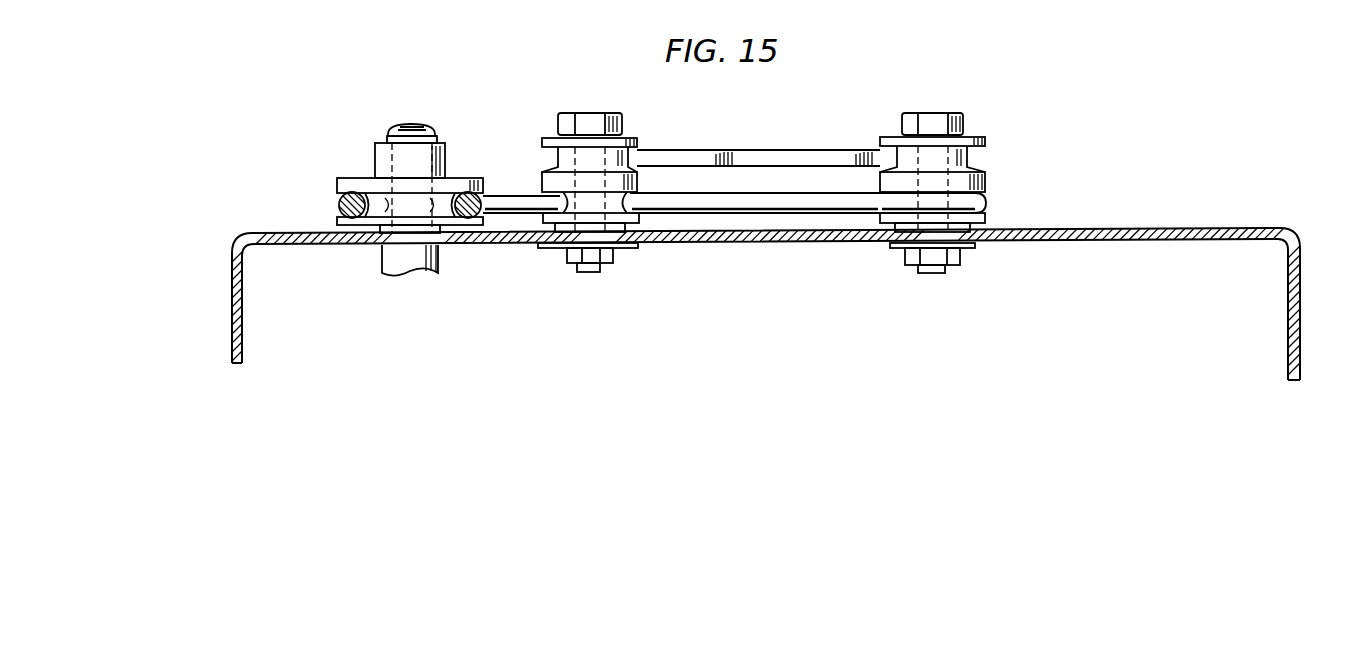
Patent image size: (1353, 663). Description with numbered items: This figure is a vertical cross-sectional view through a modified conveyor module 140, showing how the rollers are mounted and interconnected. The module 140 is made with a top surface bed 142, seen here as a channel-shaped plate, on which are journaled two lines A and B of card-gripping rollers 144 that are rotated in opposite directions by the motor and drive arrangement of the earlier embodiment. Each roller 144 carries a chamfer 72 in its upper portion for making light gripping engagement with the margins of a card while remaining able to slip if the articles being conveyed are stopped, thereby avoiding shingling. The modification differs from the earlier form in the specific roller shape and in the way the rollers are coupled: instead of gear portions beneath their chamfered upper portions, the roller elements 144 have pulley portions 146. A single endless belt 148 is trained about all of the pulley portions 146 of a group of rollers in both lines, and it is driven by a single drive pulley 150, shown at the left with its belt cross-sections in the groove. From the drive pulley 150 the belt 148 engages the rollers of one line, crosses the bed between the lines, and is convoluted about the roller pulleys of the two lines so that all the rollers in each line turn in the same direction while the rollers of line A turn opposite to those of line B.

The module 140 is at (205, 303).
The top surface bed 142 is at (301, 232).
The card-gripping roller 144 is at (776, 164).
The pulley portion 146 is at (540, 222).
The endless belt 148 is at (808, 202).
The drive pulley 150 is at (357, 180).
The chamfer 72 is at (780, 153).
The line of card-gripping rollers A is at (918, 102).
The line of card-gripping rollers B is at (585, 105).